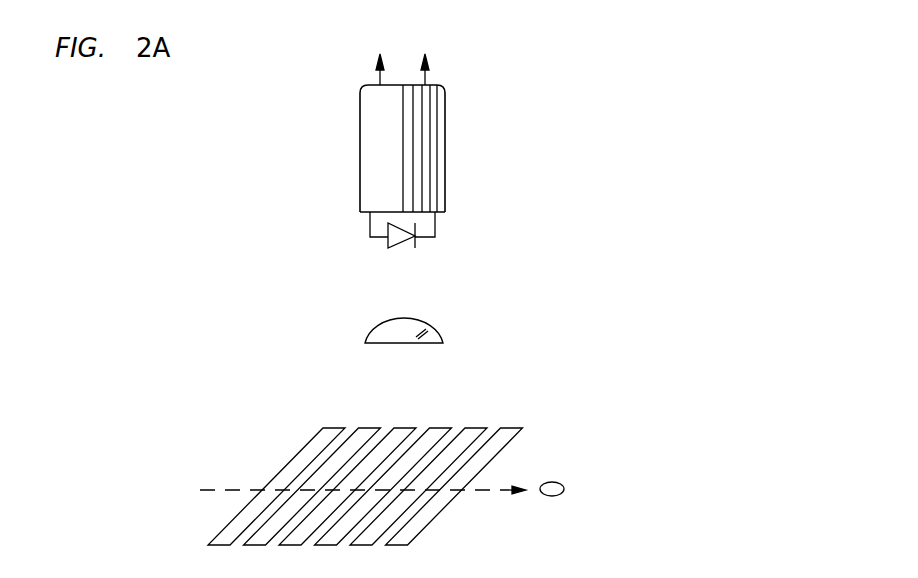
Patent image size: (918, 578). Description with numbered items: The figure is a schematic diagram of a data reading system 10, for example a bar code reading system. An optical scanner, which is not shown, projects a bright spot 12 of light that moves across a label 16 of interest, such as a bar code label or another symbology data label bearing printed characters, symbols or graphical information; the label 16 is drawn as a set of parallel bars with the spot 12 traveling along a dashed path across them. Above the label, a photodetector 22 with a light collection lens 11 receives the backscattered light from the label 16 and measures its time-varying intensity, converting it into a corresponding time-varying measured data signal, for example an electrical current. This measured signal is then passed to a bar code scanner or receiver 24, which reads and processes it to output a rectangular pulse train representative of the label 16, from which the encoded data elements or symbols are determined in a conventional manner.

The data reading system 10 is at (570, 110).
The bar code scanner or receiver 24 is at (445, 160).
The photodetector 22 is at (390, 243).
The light collection lens 11 is at (387, 345).
The label 16 is at (308, 444).
The bright spot 12 is at (546, 496).